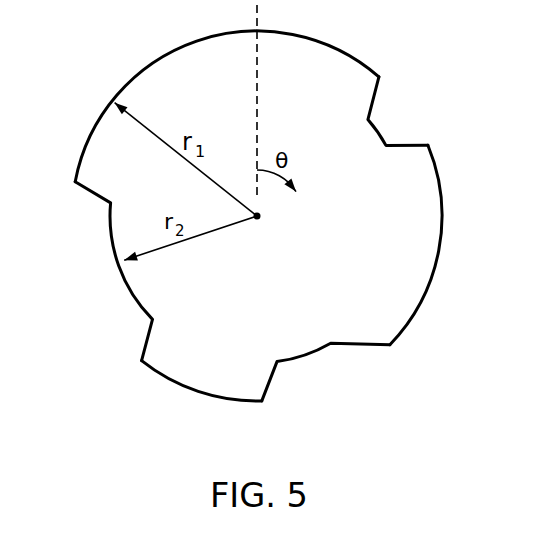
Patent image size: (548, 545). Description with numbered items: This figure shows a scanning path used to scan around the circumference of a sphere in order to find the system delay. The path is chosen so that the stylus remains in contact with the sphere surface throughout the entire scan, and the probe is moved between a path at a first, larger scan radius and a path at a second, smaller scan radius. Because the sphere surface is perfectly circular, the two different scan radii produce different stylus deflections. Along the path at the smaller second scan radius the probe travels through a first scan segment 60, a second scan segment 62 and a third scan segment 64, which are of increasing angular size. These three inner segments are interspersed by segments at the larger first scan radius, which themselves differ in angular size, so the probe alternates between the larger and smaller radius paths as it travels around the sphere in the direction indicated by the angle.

The first scan segment 60 is at (387, 72).
The second scan segment 62 is at (383, 362).
The third scan segment 64 is at (67, 188).